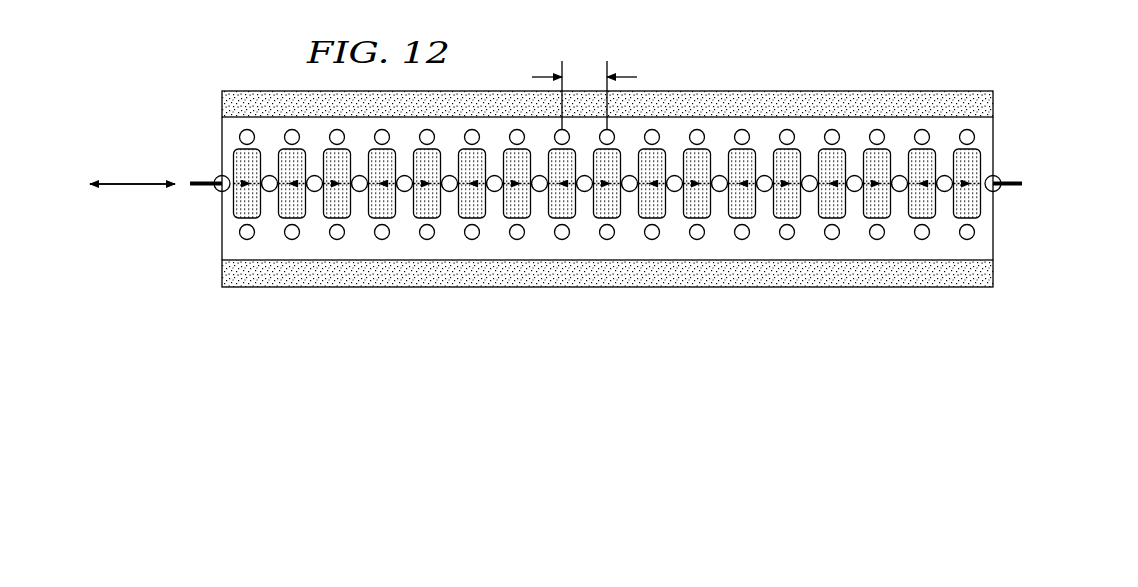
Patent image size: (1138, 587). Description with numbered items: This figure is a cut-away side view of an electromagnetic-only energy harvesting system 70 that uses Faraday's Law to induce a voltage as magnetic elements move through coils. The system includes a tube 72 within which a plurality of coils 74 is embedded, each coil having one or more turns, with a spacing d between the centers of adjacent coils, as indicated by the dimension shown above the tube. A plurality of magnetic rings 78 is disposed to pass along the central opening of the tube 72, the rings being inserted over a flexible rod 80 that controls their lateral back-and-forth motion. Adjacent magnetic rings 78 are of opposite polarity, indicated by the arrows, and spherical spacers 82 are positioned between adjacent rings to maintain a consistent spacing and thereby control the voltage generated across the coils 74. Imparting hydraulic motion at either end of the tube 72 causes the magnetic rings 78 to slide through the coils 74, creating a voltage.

The electromagnetic-only energy harvesting system 70 is at (1056, 89).
The tube 72 is at (959, 97).
The plurality of coils 74 is at (699, 239).
The magnetic rings 78 is at (464, 211).
The flexible rod 80 is at (202, 182).
The spherical spacers 82 is at (583, 187).